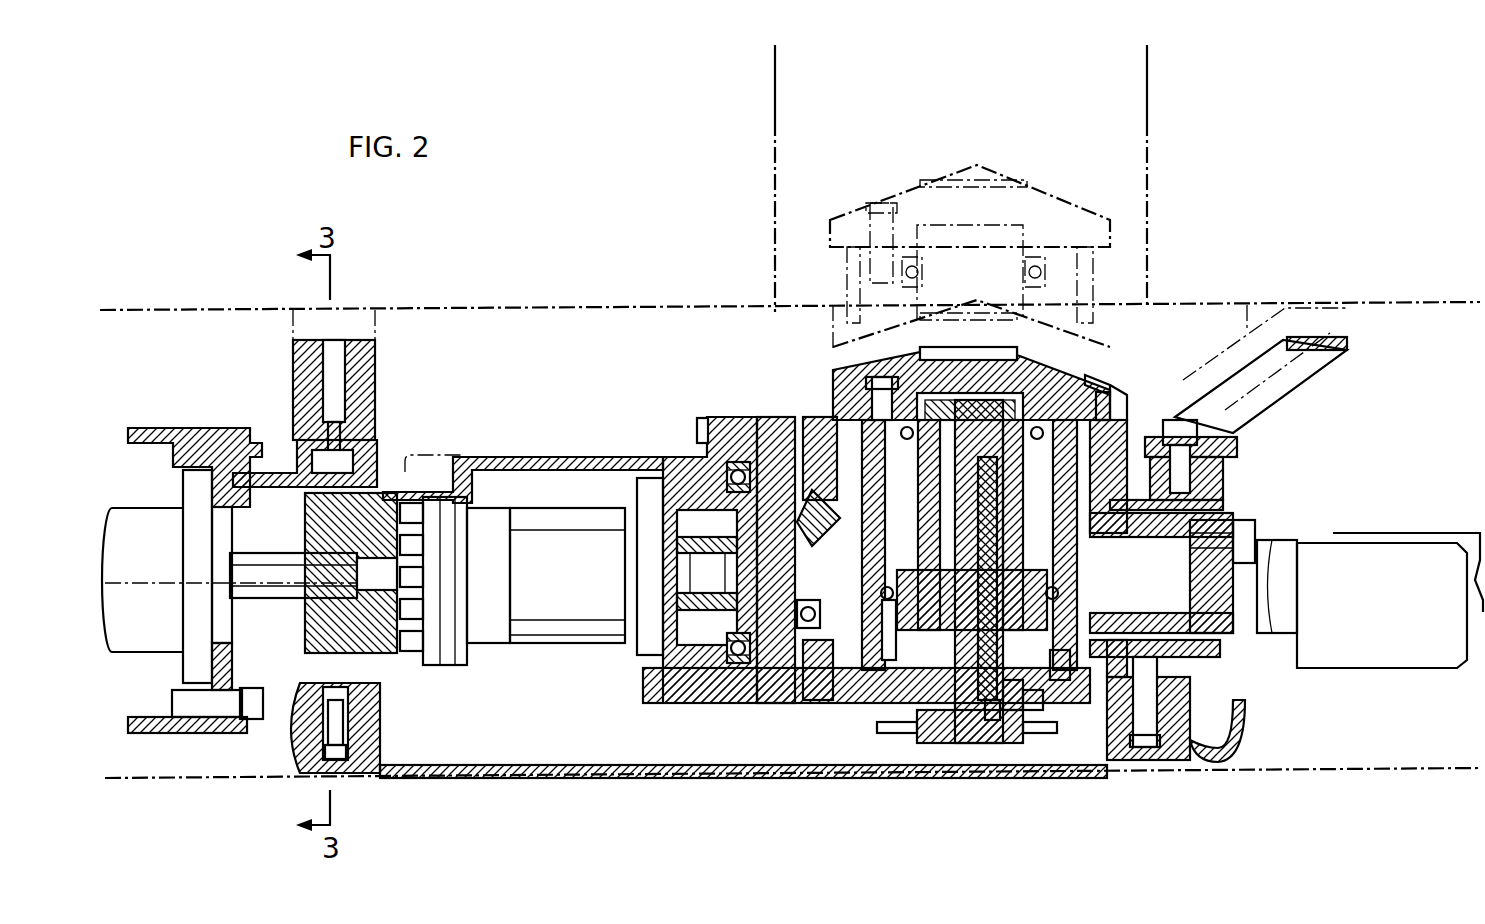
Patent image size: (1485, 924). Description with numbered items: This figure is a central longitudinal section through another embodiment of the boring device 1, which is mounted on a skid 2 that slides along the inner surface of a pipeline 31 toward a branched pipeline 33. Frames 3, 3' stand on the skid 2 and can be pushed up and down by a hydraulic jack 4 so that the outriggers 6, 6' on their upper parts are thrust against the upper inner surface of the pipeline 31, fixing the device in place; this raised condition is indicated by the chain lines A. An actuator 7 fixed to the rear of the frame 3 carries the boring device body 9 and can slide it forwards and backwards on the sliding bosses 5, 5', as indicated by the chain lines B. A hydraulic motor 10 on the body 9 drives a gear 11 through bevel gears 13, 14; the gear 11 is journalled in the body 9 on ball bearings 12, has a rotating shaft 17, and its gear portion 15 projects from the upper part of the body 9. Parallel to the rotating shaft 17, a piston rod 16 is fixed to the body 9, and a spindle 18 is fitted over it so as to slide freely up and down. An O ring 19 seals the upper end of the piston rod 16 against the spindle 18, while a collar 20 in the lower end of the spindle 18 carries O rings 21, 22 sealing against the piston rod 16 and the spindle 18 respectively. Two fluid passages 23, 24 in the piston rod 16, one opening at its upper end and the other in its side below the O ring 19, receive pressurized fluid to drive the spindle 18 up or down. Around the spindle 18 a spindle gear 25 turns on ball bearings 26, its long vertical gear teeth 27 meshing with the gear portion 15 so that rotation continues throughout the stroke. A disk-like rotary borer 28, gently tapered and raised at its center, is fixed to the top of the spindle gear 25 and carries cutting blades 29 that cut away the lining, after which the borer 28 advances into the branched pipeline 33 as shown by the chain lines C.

The boring device 1 is at (582, 385).
The skid 2 is at (480, 768).
The frame 3 is at (195, 552).
The frame 3' is at (1196, 465).
The hydraulic jack 4 is at (975, 160).
The sliding boss 5 is at (355, 728).
The sliding boss 5' is at (1176, 701).
The outrigger 6 is at (319, 411).
The outrigger 6' is at (1275, 367).
The actuator 7 is at (138, 528).
The boring device body 9 is at (800, 710).
The hydraulic motor 10 is at (583, 642).
The gear 11 is at (760, 417).
The ball bearings 12 is at (712, 470).
The bevel gear 13 is at (742, 600).
The bevel gear 14 is at (815, 548).
The gear portion 15 is at (700, 432).
The piston rod 16 is at (970, 748).
The rotating shaft 17 is at (785, 678).
The spindle 18 is at (1112, 395).
The O ring 19 is at (1100, 393).
The collar 20 is at (1050, 692).
The O ring 21 is at (1025, 742).
The O ring 22 is at (1060, 672).
The fluid passage 23 is at (930, 740).
The fluid passage 24 is at (990, 746).
The spindle gear 25 is at (1098, 553).
The ball bearings 26 is at (868, 396).
The gear teeth 27 is at (1085, 597).
The rotary borer 28 is at (890, 350).
The cutting blades 29 is at (940, 350).
The pipeline 31 is at (434, 306).
The branched pipeline 33 is at (775, 175).
The chain lines A is at (280, 322).
The chain lines B is at (428, 445).
The chain lines C is at (1068, 195).